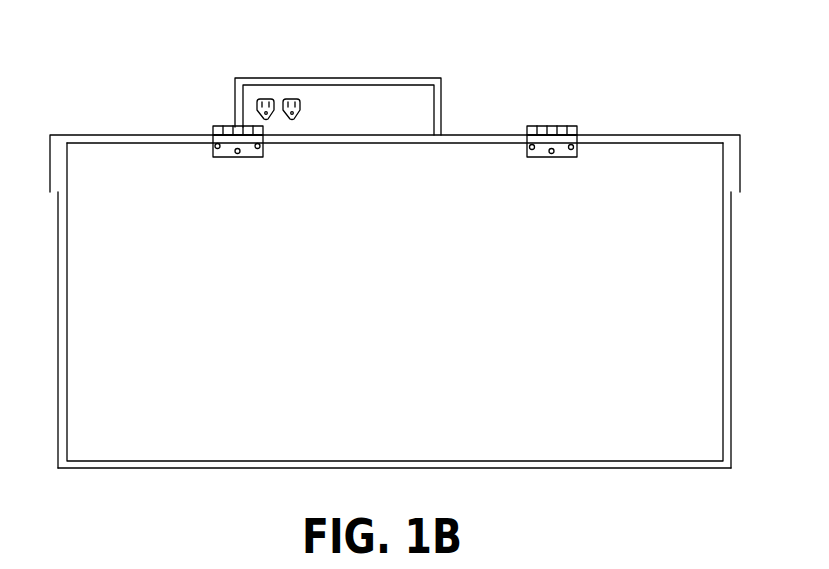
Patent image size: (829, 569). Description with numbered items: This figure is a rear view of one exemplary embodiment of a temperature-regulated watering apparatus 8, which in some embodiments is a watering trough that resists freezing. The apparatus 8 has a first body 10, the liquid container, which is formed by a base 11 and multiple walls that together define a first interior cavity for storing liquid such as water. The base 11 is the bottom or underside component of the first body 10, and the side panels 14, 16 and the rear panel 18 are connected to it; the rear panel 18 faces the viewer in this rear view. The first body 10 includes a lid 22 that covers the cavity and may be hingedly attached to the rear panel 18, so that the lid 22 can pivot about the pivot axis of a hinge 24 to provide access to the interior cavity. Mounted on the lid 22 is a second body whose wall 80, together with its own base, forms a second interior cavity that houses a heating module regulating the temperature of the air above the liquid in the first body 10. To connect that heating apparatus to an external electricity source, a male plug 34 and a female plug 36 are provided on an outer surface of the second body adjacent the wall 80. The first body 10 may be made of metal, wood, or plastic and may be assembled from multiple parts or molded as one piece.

The temperature-regulated watering apparatus 8 is at (396, 335).
The first body 10 is at (395, 111).
The base 11 is at (115, 469).
The side panel 14 is at (730, 225).
The side panel 16 is at (57, 273).
The rear panel 18 is at (703, 323).
The lid 22 is at (125, 135).
The hinge 24 is at (229, 158).
The male plug 34 is at (257, 110).
The female plug 36 is at (300, 103).
The wall 80 is at (321, 76).